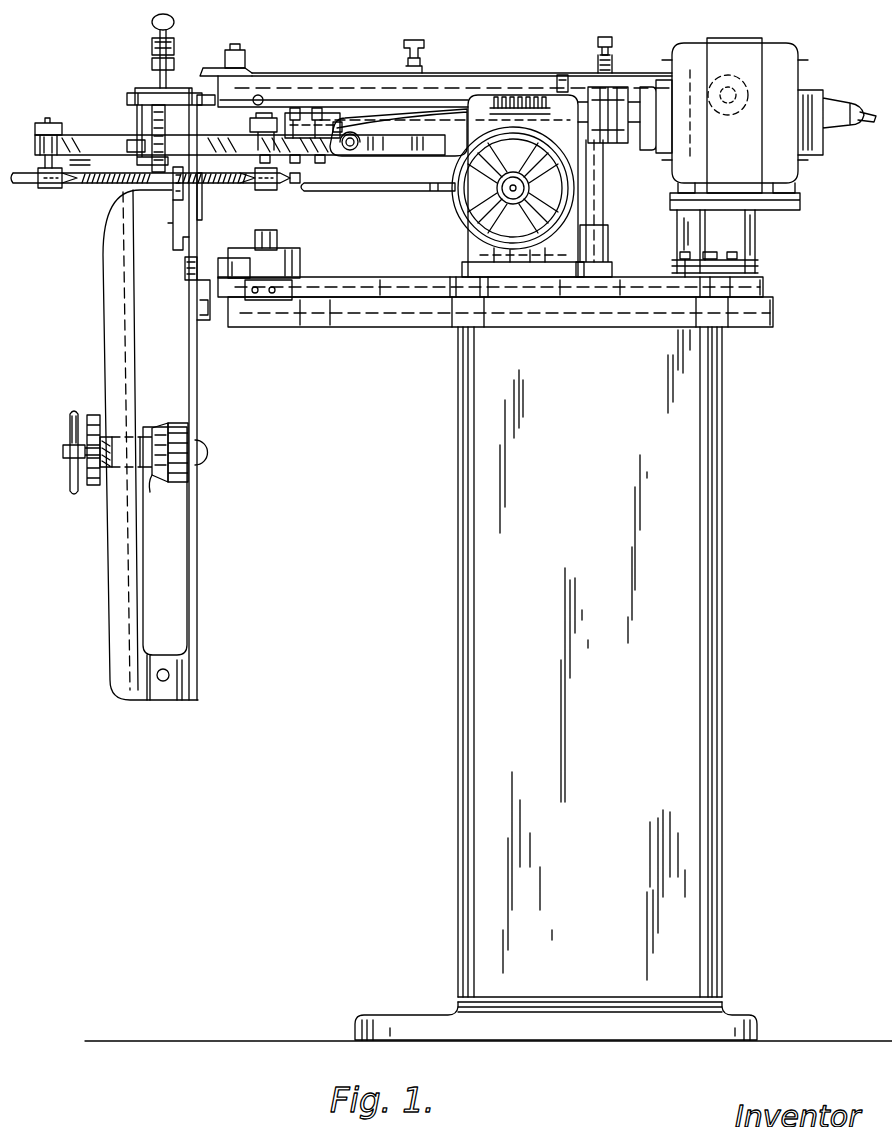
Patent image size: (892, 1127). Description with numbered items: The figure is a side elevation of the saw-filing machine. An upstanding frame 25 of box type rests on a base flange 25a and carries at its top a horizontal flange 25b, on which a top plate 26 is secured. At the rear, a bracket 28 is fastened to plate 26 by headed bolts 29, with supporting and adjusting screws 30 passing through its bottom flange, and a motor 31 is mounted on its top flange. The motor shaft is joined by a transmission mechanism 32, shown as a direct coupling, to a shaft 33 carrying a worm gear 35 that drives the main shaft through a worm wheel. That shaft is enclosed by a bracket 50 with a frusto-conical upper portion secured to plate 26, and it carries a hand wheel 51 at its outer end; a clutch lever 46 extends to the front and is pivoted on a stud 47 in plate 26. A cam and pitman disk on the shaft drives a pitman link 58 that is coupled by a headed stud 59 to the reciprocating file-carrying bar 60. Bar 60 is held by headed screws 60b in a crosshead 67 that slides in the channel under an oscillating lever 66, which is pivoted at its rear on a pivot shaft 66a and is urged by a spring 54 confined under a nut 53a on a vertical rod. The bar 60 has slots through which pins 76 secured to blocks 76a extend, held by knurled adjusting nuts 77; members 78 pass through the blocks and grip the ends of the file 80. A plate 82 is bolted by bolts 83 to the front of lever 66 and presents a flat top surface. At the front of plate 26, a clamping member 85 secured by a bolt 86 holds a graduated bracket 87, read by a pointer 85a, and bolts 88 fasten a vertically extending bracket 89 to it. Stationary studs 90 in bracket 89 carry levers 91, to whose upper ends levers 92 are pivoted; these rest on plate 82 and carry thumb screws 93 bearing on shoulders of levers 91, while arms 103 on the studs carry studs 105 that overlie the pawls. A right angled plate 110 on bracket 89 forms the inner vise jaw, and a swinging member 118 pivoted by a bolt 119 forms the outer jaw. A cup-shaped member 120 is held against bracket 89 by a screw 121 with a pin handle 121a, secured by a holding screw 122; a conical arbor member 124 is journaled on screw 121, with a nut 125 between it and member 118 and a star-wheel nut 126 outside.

The upstanding frame 25 is at (700, 468).
The base flange 25a is at (408, 1022).
The horizontal flange 25b is at (775, 316).
The top plate 26 is at (770, 280).
The bracket 28 is at (748, 228).
The headed bolts 29 is at (706, 250).
The supporting and adjusting screws 30 is at (678, 258).
The motor 31 is at (775, 52).
The transmission mechanism 32 is at (620, 143).
The shaft 33 is at (606, 134).
The worm gear 35 is at (520, 102).
The clutch lever 46 is at (368, 192).
The stud 47 is at (592, 204).
The bracket 50 is at (476, 254).
The hand wheel 51 is at (452, 210).
The nut 53a is at (612, 42).
The spring 54 is at (612, 62).
The pitman link 58 is at (440, 150).
The headed stud 59 is at (352, 132).
The file-carrying bar 60 is at (206, 150).
The headed screws 60b is at (296, 108).
The oscillating lever 66 is at (447, 80).
The pivot shaft 66a is at (336, 134).
The crosshead 67 is at (338, 112).
The pins 76 is at (74, 155).
The blocks 76a is at (50, 188).
The knurled adjusting nuts 77 is at (42, 120).
The file-holding members 78 is at (40, 178).
The file 80 is at (115, 186).
The plate 82 is at (192, 86).
The bolts 83 is at (235, 50).
The clamping member 85 is at (288, 250).
The pointer 85a is at (262, 300).
The bolt 86 is at (270, 238).
The bracket 87 is at (228, 258).
The bolts 88 is at (200, 322).
The vertically extending bracket 89 is at (198, 513).
The stationary studs 90 is at (208, 96).
The lever 91 is at (152, 64).
The lever 92 is at (152, 45).
The thumb screw 93 is at (174, 22).
The arm 103 is at (137, 116).
The stud 105 is at (136, 150).
The right angled plate 110 is at (198, 192).
The swinging member 118 is at (120, 327).
The headed and nutted bolt 119 is at (165, 670).
The cup-shaped member 120 is at (180, 423).
The screw 121 is at (63, 456).
The pin handle 121a is at (70, 420).
The holding screw 122 is at (210, 453).
The arbor member 124 is at (152, 482).
The nut 125 is at (146, 430).
The nut 126 is at (94, 414).